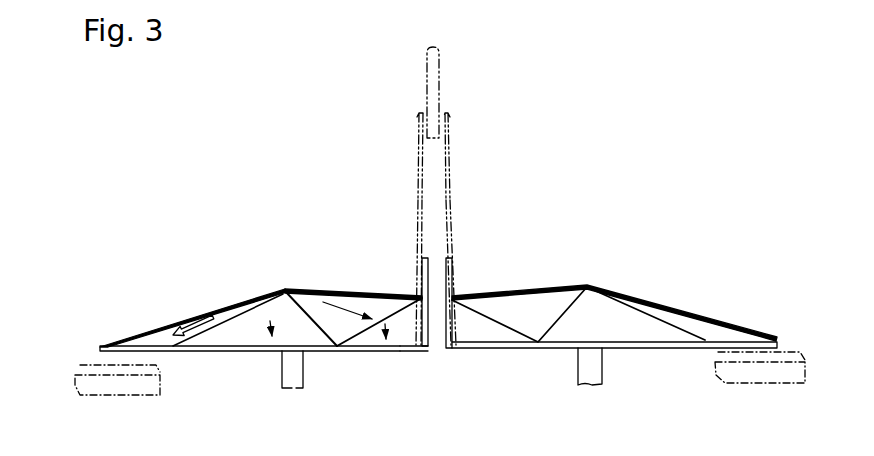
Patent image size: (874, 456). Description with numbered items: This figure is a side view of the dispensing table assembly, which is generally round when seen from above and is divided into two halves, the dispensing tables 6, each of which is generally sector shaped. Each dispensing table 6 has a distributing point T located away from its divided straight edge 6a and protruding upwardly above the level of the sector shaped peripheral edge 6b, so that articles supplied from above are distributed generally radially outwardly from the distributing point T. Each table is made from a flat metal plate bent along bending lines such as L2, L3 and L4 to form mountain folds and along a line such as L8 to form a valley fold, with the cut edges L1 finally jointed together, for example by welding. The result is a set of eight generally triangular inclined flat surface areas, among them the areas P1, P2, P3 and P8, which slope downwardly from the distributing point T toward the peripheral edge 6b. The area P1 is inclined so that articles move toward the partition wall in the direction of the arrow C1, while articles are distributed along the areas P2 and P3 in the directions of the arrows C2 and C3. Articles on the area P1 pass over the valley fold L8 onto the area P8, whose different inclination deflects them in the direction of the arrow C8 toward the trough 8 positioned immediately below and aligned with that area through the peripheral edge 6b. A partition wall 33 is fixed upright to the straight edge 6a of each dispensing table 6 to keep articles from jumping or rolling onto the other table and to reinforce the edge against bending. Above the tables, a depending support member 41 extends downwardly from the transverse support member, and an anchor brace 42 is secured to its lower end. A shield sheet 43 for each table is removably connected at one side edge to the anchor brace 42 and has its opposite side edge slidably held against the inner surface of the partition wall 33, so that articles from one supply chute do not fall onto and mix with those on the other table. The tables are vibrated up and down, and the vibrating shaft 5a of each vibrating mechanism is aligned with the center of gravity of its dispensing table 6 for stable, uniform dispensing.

The depending support member 41 is at (436, 63).
The anchor brace 42 is at (448, 120).
The shield sheet 43 is at (415, 228).
The partition wall 33 is at (427, 350).
The dispensing table 6 is at (158, 320).
The divided straight edge 6a is at (417, 351).
The sector shaped peripheral edge 6b is at (272, 351).
The vibrating shaft 5a is at (295, 390).
The trough 8 is at (110, 397).
The cut edge L1 is at (368, 293).
The bending line L2 is at (325, 335).
The bending line L3 is at (193, 338).
The bending line L4 is at (240, 302).
The valley fold L8 is at (352, 350).
The inclined flat surface area P1 is at (335, 292).
The inclined flat surface area P2 is at (255, 340).
The inclined flat surface area P3 is at (210, 315).
The inclined flat surface area P8 is at (367, 350).
The arrow c1 C1 is at (347, 318).
The arrow c2 C2 is at (286, 331).
The arrow c3 C3 is at (150, 333).
The arrow c8 C8 is at (403, 348).
The distributing point T is at (286, 290).